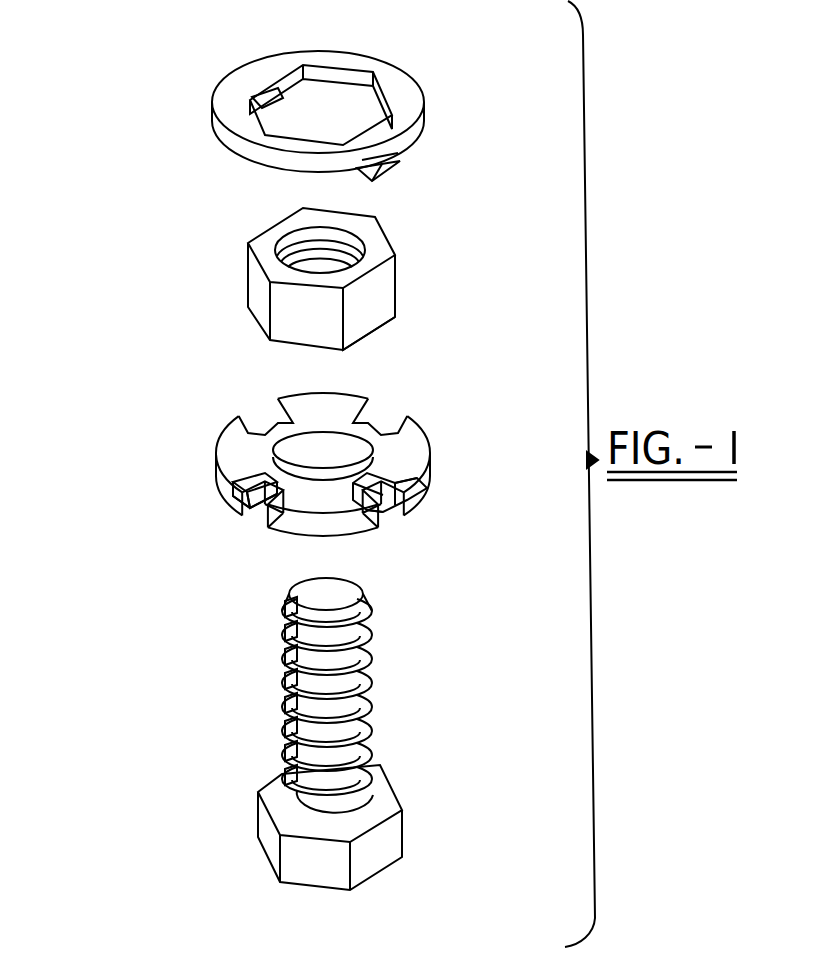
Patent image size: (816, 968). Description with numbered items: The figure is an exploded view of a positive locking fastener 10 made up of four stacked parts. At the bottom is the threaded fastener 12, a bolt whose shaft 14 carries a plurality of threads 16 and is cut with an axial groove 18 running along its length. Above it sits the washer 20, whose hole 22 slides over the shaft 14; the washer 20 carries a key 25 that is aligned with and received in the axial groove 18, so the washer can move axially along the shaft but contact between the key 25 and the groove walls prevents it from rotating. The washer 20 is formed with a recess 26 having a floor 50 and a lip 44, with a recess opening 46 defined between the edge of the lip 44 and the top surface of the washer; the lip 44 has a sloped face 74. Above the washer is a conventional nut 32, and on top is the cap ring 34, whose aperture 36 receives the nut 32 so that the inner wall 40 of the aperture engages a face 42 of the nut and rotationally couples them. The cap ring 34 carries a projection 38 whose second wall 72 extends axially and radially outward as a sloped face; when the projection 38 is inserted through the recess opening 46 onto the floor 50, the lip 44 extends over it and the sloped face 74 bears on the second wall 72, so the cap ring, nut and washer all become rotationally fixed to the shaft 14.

The positive locking fastener 10 is at (146, 92).
The threaded fastener 12 is at (410, 840).
The shaft 14 is at (356, 728).
The threads 16 is at (369, 612).
The axial groove 18 is at (287, 640).
The washer 20 is at (326, 470).
The hole 22 is at (337, 445).
The key 25 is at (317, 455).
The recess 26 is at (390, 427).
The nut 32 is at (384, 279).
The cap ring 34 is at (366, 100).
The aperture 36 is at (385, 72).
The projection 38 is at (392, 176).
The inner wall 40 is at (333, 76).
The face 42 is at (370, 315).
The lip 44 is at (265, 528).
The recess opening 46 is at (235, 473).
The floor 50 is at (253, 512).
The second wall 72 is at (397, 160).
The sloped face 74 is at (410, 495).